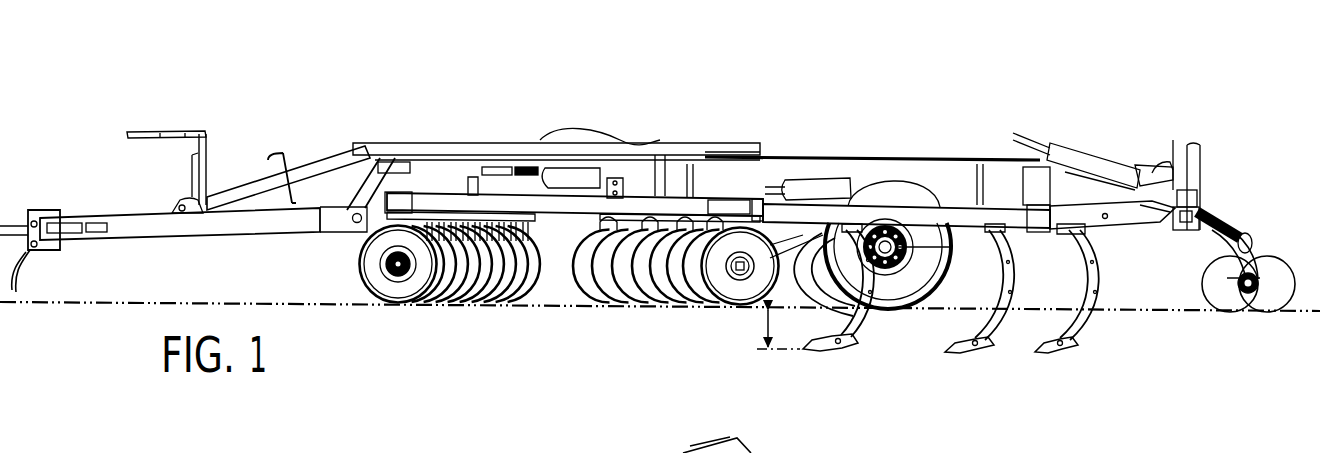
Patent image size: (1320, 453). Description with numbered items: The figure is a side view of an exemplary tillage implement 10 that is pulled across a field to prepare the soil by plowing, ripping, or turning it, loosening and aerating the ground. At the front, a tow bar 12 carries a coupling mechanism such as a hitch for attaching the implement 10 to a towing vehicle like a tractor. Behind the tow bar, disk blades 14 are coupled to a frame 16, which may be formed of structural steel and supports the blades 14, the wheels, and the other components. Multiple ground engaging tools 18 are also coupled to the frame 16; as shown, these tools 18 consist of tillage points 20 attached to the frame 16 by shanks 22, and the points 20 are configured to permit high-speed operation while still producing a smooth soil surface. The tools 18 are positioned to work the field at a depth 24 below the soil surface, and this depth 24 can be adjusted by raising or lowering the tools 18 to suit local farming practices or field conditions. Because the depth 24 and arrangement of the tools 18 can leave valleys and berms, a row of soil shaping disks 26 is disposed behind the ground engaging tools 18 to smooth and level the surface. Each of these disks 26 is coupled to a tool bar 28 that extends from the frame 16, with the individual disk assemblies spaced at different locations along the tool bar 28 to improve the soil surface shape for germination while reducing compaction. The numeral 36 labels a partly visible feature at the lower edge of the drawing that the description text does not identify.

The tillage implement 10 is at (389, 102).
The tow bar 12 is at (236, 230).
The disk blades 14 is at (456, 325).
The frame 16 is at (907, 208).
The ground engaging tools 18 is at (955, 362).
The tillage points 20 is at (814, 352).
The shanks 22 is at (870, 324).
The depth 24 is at (766, 330).
The soil shaping disks 26 is at (1283, 325).
The tool bar 28 is at (1161, 220).
The rear attachment 36 is at (712, 447).